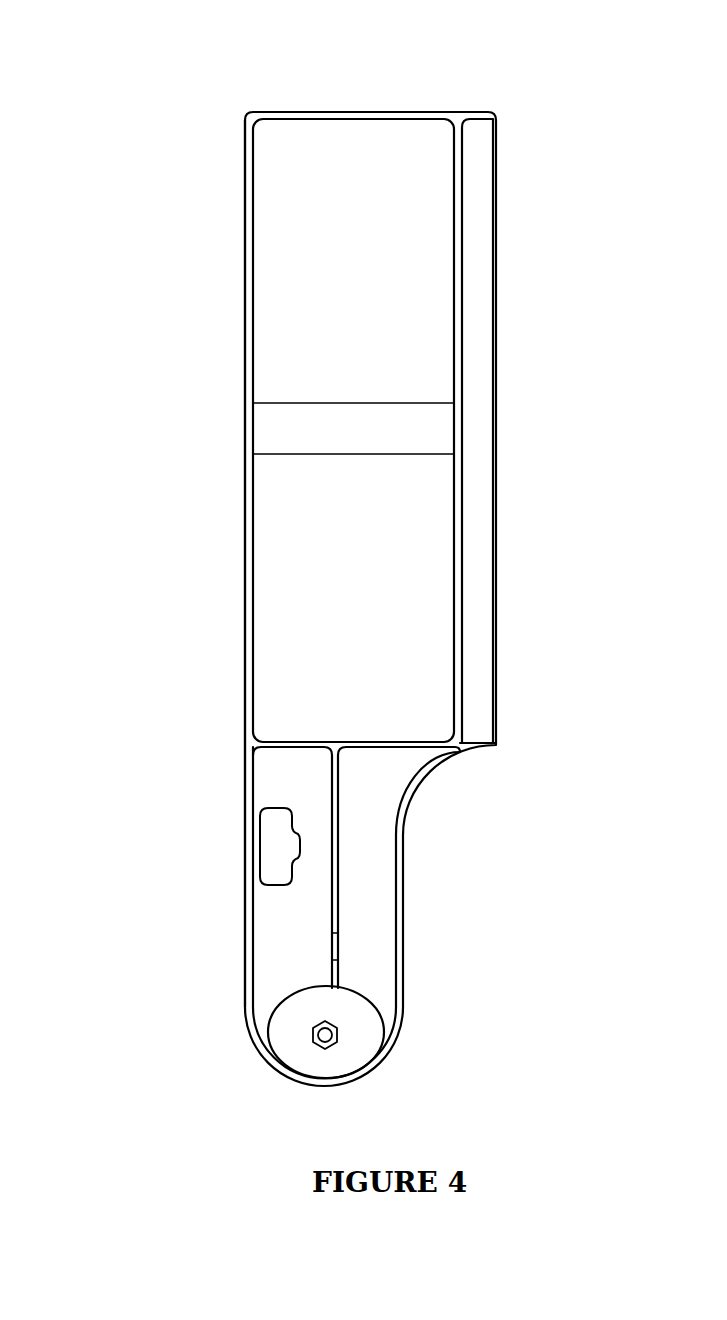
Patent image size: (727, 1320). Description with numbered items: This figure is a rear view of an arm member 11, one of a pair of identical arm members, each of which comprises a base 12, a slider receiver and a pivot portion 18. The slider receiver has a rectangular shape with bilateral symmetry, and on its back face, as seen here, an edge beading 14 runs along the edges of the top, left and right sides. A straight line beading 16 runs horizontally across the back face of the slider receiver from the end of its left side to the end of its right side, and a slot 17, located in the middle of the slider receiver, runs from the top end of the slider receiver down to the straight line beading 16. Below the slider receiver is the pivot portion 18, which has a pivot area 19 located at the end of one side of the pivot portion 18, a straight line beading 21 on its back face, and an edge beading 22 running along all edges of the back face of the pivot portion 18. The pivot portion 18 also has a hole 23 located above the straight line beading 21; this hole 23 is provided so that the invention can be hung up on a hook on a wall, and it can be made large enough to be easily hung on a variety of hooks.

The arm member 11 is at (412, 578).
The base 12 is at (317, 265).
The edge beading 14 is at (245, 572).
The straight line beading 16 is at (462, 558).
The slot 17 is at (279, 427).
The pivot portion 18 is at (243, 942).
The pivot area 19 is at (367, 1053).
The straight line beading 21 is at (338, 833).
The edge beading 22 is at (403, 890).
The hole 23 is at (267, 837).